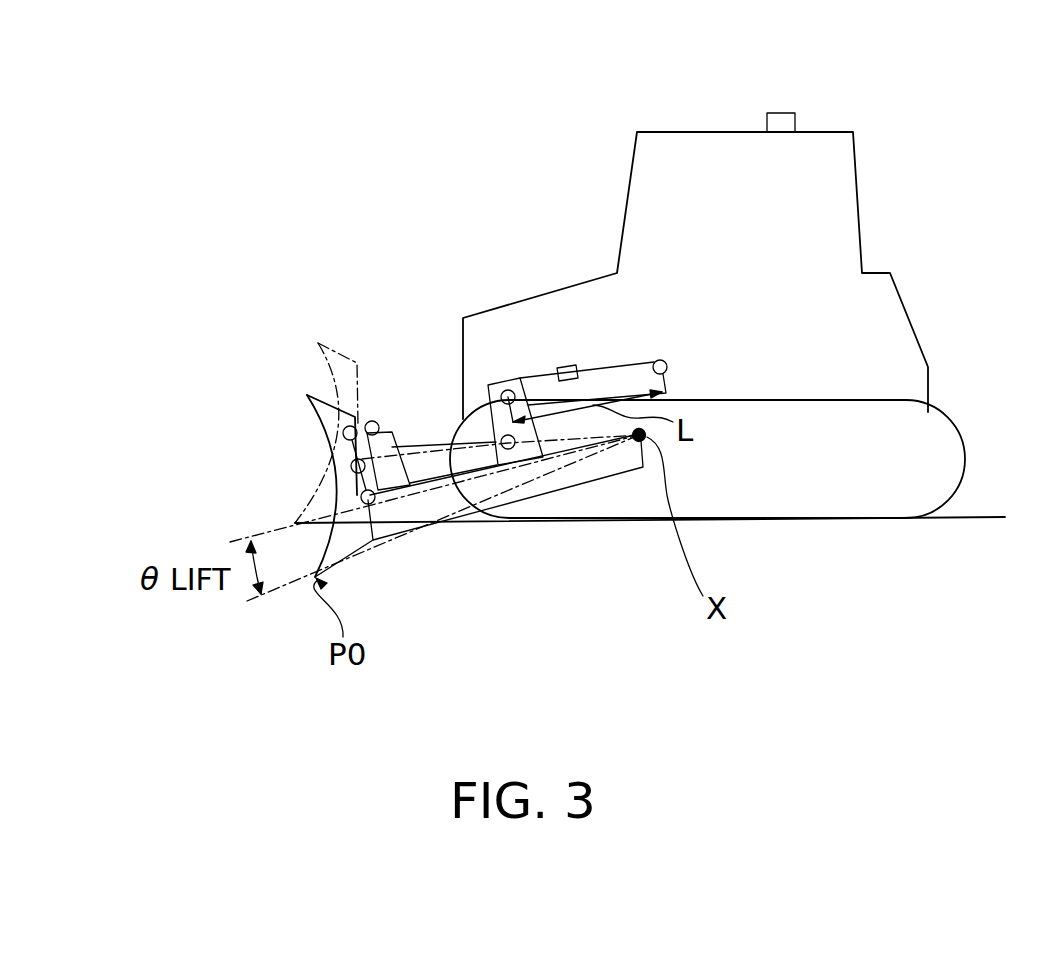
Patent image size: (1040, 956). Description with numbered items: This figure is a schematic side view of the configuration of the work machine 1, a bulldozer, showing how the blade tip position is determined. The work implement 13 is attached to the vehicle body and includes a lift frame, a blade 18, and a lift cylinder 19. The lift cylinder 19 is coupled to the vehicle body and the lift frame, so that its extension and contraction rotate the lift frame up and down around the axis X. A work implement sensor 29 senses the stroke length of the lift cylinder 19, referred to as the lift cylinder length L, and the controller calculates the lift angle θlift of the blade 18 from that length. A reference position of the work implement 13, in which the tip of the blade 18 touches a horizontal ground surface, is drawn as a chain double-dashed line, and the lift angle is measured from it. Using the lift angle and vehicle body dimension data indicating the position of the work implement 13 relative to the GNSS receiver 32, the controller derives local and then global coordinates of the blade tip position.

The work machine 1 is at (297, 158).
The work implement 13 is at (385, 378).
The blade 18 is at (337, 448).
The lift cylinder 19 is at (594, 362).
The work implement sensor 29 is at (562, 367).
The GNSS receiver 32 is at (783, 113).